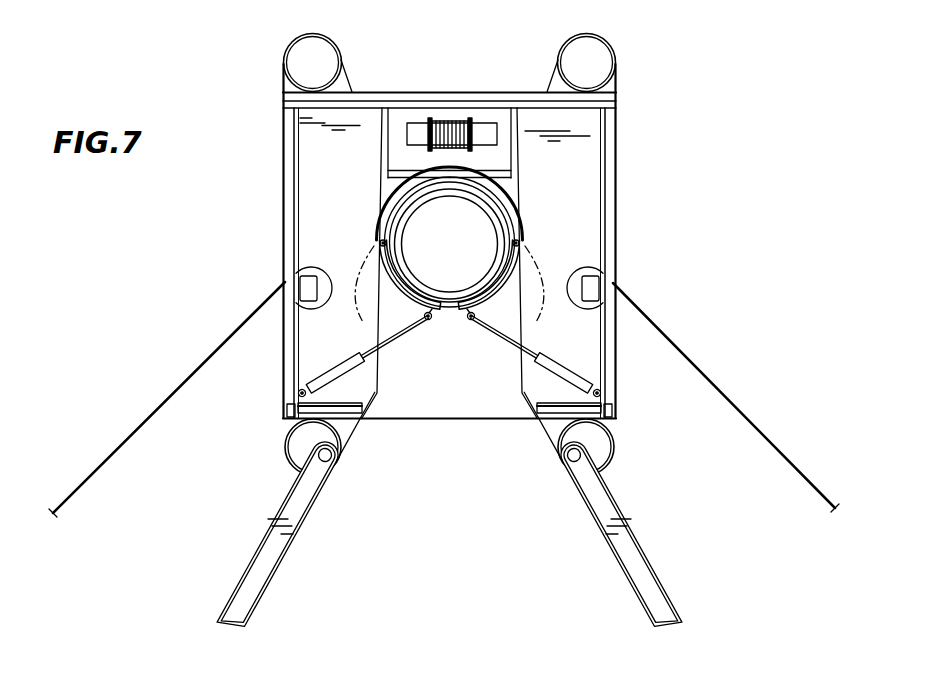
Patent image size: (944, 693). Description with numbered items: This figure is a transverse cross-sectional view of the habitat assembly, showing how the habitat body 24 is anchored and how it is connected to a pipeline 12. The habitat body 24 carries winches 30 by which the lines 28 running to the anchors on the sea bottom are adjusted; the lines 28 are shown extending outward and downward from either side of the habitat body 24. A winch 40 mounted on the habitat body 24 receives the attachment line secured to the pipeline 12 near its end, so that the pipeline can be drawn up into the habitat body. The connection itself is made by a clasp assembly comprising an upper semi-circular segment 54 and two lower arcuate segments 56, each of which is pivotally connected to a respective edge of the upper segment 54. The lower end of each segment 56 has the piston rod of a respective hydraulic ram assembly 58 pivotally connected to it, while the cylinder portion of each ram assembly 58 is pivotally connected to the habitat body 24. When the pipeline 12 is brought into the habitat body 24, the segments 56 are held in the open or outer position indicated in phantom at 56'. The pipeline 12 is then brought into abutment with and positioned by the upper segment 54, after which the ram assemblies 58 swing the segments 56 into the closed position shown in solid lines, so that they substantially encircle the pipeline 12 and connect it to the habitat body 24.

The pipeline 12 is at (404, 226).
The habitat body 24 is at (393, 92).
The lines 28 is at (178, 385).
The winches 30 is at (307, 263).
The winches 40 is at (485, 132).
The upper semi-circular segment 54 is at (500, 193).
The lower arcuate segments 56 is at (450, 280).
The lower arcuate segments in open position 56' is at (450, 264).
The hydraulic ram assembly 58 is at (357, 368).